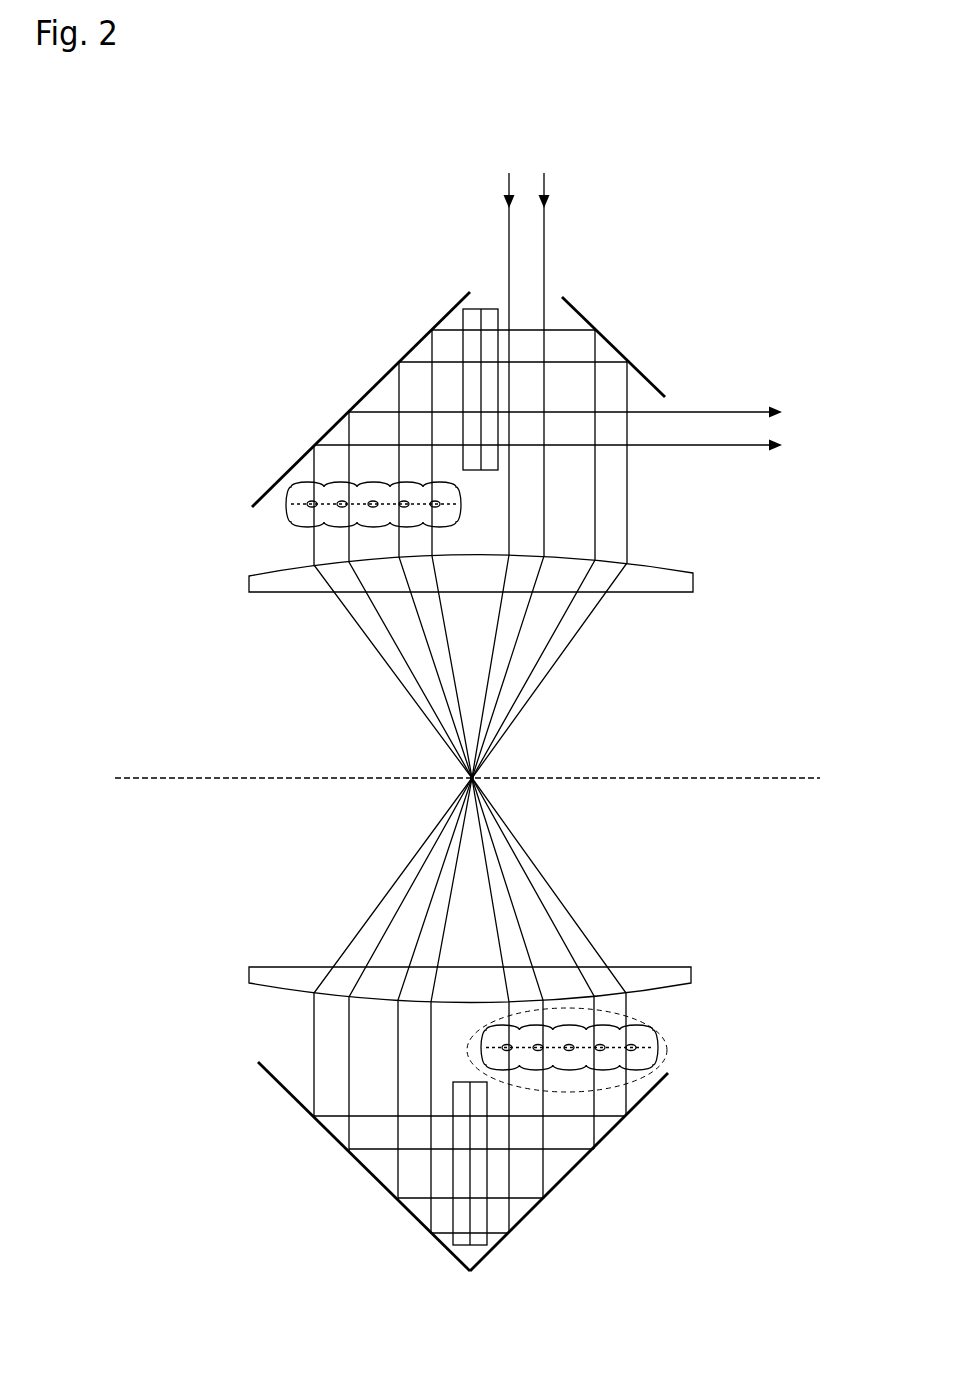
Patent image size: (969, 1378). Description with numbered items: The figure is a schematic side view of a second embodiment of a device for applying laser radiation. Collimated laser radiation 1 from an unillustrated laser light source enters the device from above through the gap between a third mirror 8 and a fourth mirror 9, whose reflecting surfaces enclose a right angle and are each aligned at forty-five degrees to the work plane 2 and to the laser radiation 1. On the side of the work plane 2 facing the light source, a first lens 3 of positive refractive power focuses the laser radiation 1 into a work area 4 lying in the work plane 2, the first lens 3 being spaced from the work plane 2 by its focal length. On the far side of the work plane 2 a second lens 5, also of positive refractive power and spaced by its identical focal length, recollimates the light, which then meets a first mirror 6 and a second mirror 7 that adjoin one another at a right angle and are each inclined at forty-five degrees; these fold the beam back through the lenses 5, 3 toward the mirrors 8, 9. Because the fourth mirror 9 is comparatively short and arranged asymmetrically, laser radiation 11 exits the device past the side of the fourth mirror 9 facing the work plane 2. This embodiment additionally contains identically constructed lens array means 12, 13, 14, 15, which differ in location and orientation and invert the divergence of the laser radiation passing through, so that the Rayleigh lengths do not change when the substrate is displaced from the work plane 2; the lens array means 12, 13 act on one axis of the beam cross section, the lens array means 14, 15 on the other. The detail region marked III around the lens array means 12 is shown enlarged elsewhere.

The laser radiation 1 is at (528, 234).
The work plane 2 is at (722, 778).
The first lens 3 is at (673, 578).
The work area 4 is at (482, 776).
The second lens 5 is at (664, 977).
The first mirror 6 is at (568, 1172).
The second mirror 7 is at (333, 1137).
The third mirror 8 is at (379, 383).
The fourth mirror 9 is at (612, 347).
The laser radiation 11 is at (700, 425).
The lens array means 12 is at (637, 1055).
The lens array means 13 is at (300, 515).
The lens array means 14 is at (472, 320).
The lens array means 15 is at (460, 1186).
The region III is at (672, 1026).